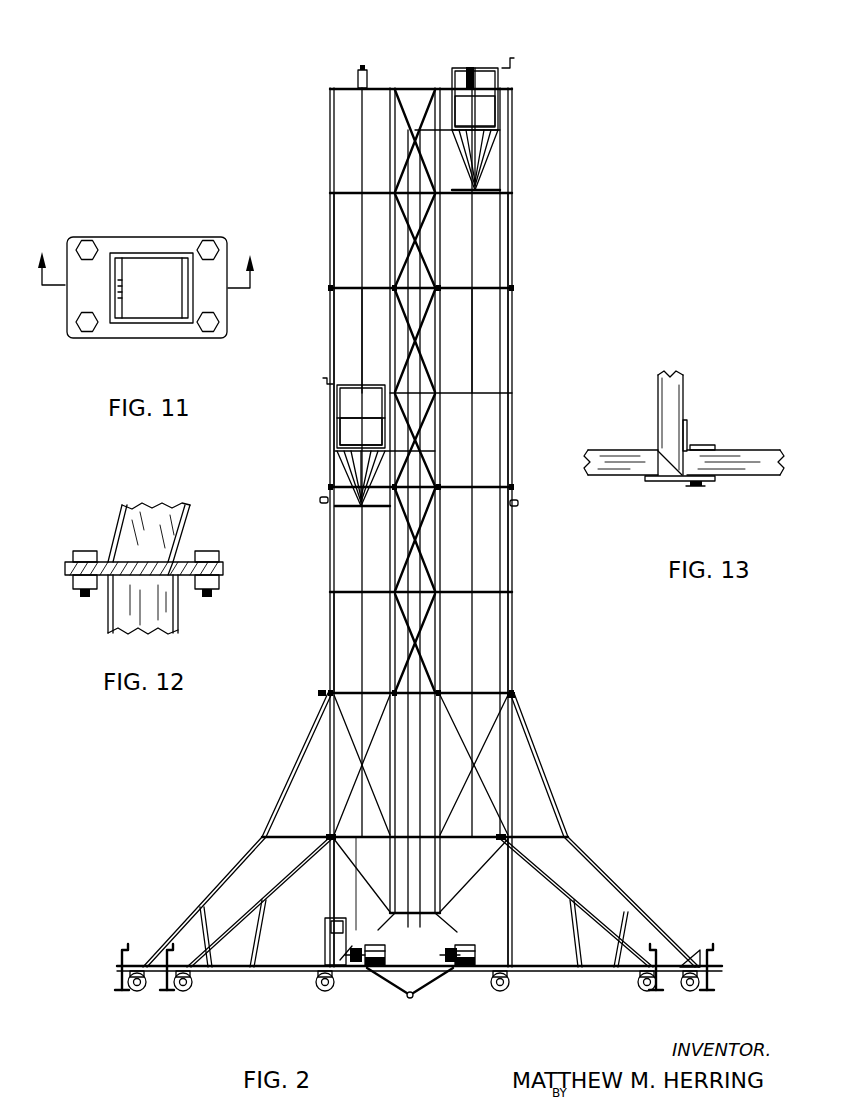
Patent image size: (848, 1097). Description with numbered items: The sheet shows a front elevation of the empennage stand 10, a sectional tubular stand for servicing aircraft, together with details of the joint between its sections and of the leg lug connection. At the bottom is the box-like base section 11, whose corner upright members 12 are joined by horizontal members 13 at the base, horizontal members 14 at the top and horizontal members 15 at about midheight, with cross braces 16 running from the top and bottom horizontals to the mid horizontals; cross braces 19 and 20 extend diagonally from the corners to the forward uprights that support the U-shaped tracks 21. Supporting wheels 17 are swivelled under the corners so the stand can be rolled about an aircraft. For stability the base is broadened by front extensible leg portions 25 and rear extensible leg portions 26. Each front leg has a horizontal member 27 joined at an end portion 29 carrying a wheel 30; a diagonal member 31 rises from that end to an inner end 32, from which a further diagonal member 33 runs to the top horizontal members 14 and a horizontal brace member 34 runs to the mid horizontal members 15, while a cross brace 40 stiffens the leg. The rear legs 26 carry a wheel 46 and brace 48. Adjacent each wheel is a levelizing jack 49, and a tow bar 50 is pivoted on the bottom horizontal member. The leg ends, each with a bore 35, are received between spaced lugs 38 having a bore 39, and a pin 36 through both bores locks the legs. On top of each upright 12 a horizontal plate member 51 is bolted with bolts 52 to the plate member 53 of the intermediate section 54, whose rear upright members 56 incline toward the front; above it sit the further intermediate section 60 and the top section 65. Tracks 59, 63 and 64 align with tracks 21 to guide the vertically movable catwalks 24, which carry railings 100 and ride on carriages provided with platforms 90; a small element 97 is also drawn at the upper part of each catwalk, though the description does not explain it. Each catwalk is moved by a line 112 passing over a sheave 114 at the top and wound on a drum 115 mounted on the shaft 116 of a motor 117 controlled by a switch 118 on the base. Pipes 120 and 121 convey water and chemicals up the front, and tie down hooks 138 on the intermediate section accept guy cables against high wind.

In FIG. 2, the empennage stand 10 is at (325, 197).
In FIG. 2, the base section 11 is at (521, 769).
In FIG. 11, the upright members 12 is at (150, 282).
In FIG. 12, the upright members 12 is at (108, 620).
In FIG. 2, the horizontal members 13 is at (340, 972).
In FIG. 2, the horizontal members 14 is at (478, 693).
In FIG. 2, the horizontal members 15 is at (356, 848).
In FIG. 13, the horizontal members 15 is at (660, 406).
In FIG. 2, the cross braces 16 is at (350, 742).
In FIG. 2, the supporting wheel 17 is at (332, 990).
In FIG. 2, the cross brace 19 is at (384, 880).
In FIG. 2, the cross brace 20 is at (378, 902).
In FIG. 2, the tracks 21 is at (328, 898).
In FIG. 2, the catwalk 24 is at (412, 284).
In FIG. 2, the extensible leg portions 25 is at (410, 869).
In FIG. 2, the extensible leg portions 26 is at (403, 883).
In FIG. 2, the horizontal member 27 is at (240, 970).
In FIG. 2, the end portion 29 is at (688, 963).
In FIG. 2, the wheel 30 is at (130, 990).
In FIG. 2, the diagonal member 31 is at (176, 925).
In FIG. 2, the inner end 32 is at (260, 836).
In FIG. 2, the diagonal member 33 is at (292, 757).
In FIG. 2, the horizontal brace member 34 is at (292, 837).
In FIG. 13, the horizontal brace member 34 is at (752, 477).
In FIG. 13, the bore 35 is at (703, 483).
In FIG. 2, the pin 36 is at (320, 692).
In FIG. 13, the pin 36 is at (702, 445).
In FIG. 2, the lugs 38 is at (513, 695).
In FIG. 13, the lugs 38 is at (688, 436).
In FIG. 13, the bore 39 is at (694, 487).
In FIG. 2, the cross brace 40 is at (215, 912).
In FIG. 2, the wheel 46 is at (190, 990).
In FIG. 2, the brace 48 is at (257, 930).
In FIG. 2, the levelizing jack 49 is at (120, 960).
In FIG. 2, the tow bar 50 is at (406, 992).
In FIG. 12, the horizontal plate member 51 is at (182, 578).
In FIG. 11, the bolts 52 is at (88, 240).
In FIG. 12, the bolts 52 is at (80, 552).
In FIG. 11, the plate member 53 is at (130, 248).
In FIG. 12, the plate member 53 is at (223, 568).
In FIG. 2, the intermediate section 54 is at (543, 590).
In FIG. 11, the upright members 56 is at (160, 326).
In FIG. 12, the upright members 56 is at (186, 522).
In FIG. 2, the tracks 59 is at (330, 605).
In FIG. 2, the intermediate section 60 is at (546, 387).
In FIG. 2, the tracks 63 is at (329, 348).
In FIG. 2, the tracks 64 is at (510, 138).
In FIG. 2, the top section 65 is at (541, 240).
In FIG. 2, the platform 90 is at (432, 130).
In FIG. 2, the hook 97 is at (505, 60).
In FIG. 2, the railings 100 is at (485, 103).
In FIG. 2, the line 112 is at (362, 318).
In FIG. 2, the sheave 114 is at (362, 70).
In FIG. 2, the drum 115 is at (352, 950).
In FIG. 2, the shaft 116 is at (368, 970).
In FIG. 2, the motor 117 is at (386, 960).
In FIG. 2, the switch 118 is at (338, 920).
In FIG. 2, the pipe 120 is at (408, 657).
In FIG. 2, the pipe 121 is at (421, 650).
In FIG. 2, the tie down hooks 138 is at (322, 502).